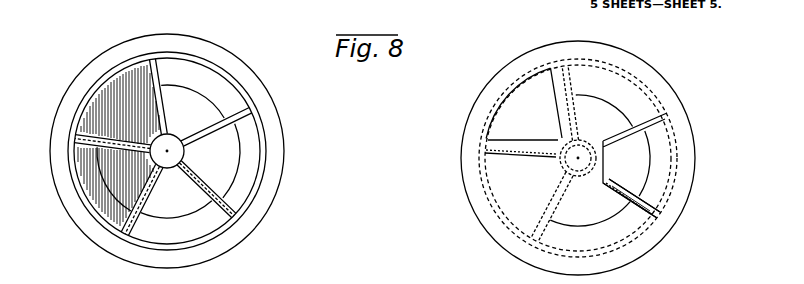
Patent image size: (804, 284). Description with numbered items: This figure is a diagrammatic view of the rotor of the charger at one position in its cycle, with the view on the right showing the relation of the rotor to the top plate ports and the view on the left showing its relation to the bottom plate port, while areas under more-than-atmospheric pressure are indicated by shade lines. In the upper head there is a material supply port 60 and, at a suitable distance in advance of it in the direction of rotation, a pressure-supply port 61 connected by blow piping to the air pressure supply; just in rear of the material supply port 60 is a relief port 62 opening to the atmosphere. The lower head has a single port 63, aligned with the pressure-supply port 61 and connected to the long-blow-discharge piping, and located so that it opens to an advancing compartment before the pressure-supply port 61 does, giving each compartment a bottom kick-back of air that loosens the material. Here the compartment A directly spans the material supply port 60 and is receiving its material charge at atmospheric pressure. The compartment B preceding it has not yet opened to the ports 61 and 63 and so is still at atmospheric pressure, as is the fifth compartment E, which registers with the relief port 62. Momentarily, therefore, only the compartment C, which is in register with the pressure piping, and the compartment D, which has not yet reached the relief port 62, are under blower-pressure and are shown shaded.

The compartment C is at (110, 83).
The port 63 is at (131, 57).
The compartment B is at (205, 90).
The compartment A is at (240, 160).
The compartment D is at (107, 184).
The fifth compartment E is at (189, 216).
The pressure-supply port 61 is at (507, 98).
The material supply port 60 is at (677, 133).
The relief port 62 is at (657, 215).